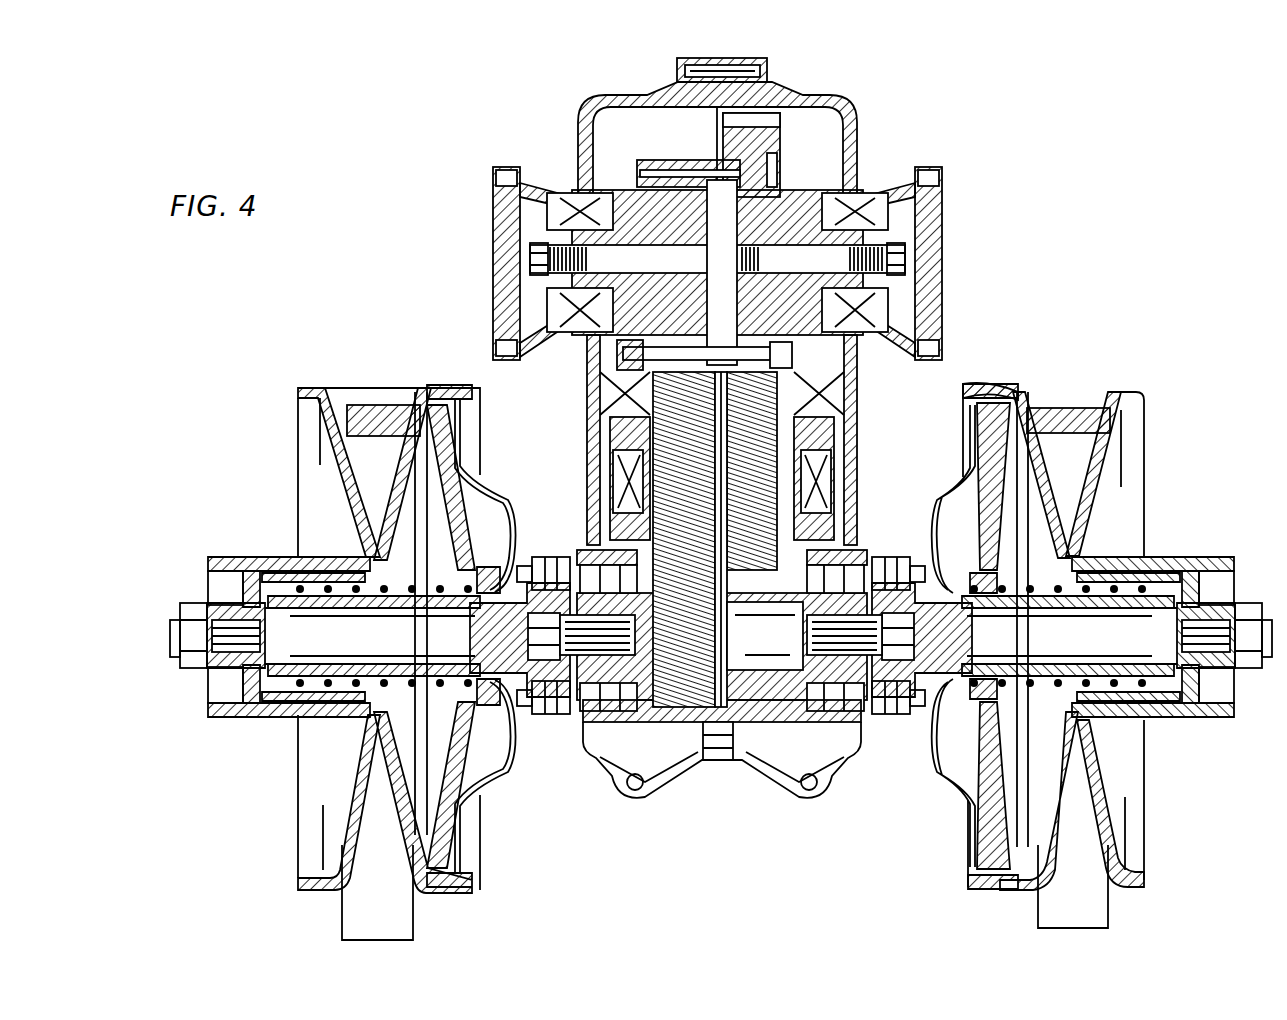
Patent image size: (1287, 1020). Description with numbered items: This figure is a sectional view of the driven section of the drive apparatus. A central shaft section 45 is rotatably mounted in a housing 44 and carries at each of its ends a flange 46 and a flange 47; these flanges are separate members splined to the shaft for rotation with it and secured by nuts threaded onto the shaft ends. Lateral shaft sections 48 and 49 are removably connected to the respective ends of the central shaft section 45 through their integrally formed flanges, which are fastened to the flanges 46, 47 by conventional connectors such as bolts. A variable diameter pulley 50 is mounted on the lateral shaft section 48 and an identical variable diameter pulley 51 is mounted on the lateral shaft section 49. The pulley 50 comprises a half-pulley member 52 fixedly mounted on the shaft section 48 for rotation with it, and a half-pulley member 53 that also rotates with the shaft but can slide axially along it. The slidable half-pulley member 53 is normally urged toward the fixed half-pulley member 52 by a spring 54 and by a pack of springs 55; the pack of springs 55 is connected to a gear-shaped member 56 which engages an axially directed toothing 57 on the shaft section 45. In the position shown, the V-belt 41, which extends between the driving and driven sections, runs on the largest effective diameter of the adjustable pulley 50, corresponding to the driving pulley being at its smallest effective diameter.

The V-belt 41 is at (393, 931).
The housing 44 is at (845, 420).
The central shaft section 45 is at (780, 665).
The flange 46 is at (897, 718).
The flange 47 is at (557, 717).
The lateral shaft section 48 is at (1170, 705).
The lateral shaft section 49 is at (280, 718).
The variable diameter pulley 50 is at (1043, 382).
The variable diameter pulley 51 is at (371, 395).
The half-pulley member 52 is at (1132, 392).
The half-pulley member 53 is at (1000, 386).
The spring 54 is at (1147, 562).
The pack of springs 55 is at (972, 440).
The gear-shaped member 56 is at (936, 775).
The axially directed toothing 57 is at (928, 560).